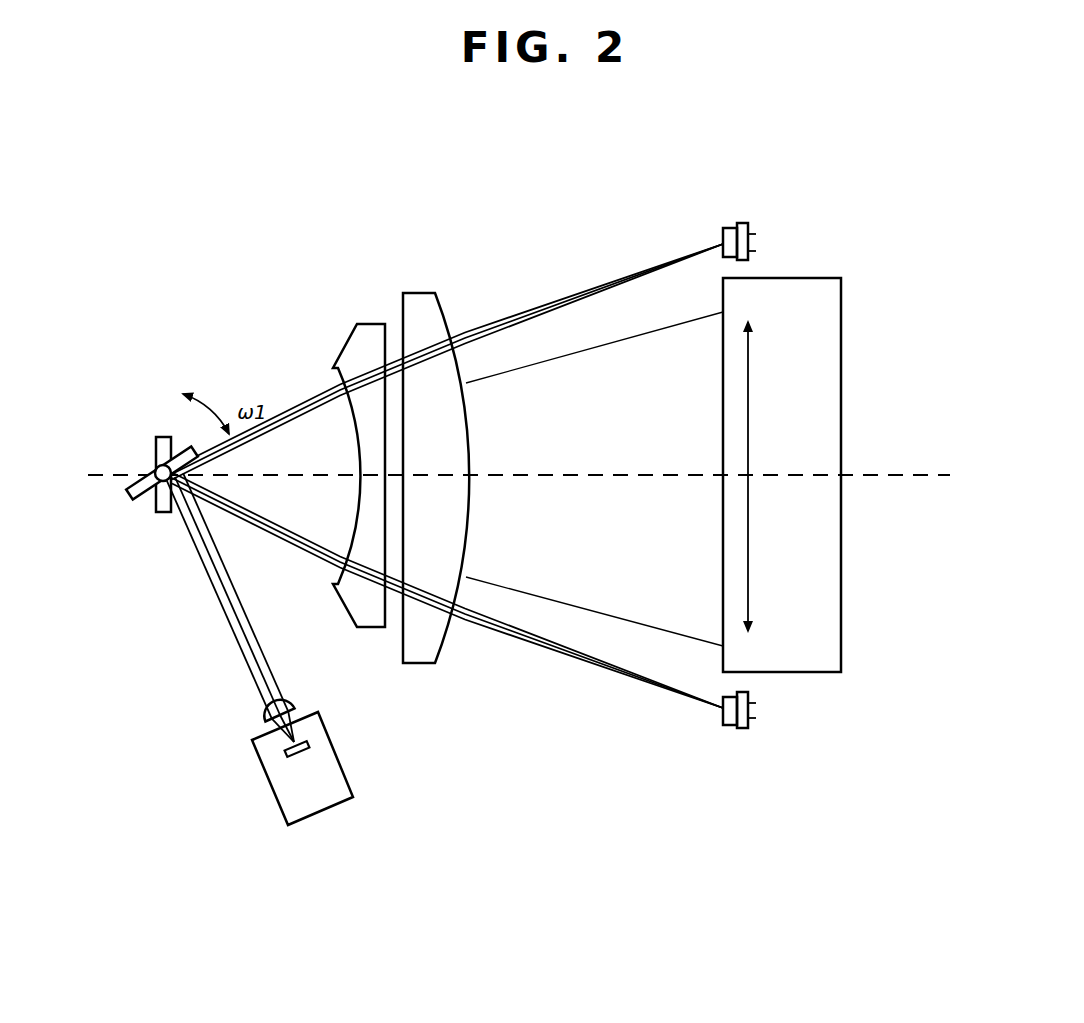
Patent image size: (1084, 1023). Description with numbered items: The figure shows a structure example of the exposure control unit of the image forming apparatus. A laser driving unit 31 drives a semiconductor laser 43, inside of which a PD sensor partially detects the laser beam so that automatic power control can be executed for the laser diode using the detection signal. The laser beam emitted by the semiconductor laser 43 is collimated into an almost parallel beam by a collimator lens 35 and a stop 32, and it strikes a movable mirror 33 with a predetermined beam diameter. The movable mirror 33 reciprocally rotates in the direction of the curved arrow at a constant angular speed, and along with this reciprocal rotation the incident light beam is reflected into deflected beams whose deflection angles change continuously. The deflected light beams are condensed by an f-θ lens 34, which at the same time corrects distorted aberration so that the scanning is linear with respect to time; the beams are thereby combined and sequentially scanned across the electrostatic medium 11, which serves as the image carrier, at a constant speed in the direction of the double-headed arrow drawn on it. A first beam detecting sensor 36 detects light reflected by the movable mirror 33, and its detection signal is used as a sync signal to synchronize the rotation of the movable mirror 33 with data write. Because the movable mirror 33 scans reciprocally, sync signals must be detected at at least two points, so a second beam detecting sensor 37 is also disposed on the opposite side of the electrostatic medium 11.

The electrostatic medium 11 is at (841, 305).
The laser driving unit 31 is at (353, 786).
The stop 32 is at (316, 680).
The movable mirror 33 is at (129, 496).
The f-θ lens 34 is at (475, 282).
The collimator lens 35 is at (263, 718).
The BD sensor 1 36 is at (740, 728).
The BD sensor 2 37 is at (740, 223).
The semiconductor laser 43 is at (307, 745).